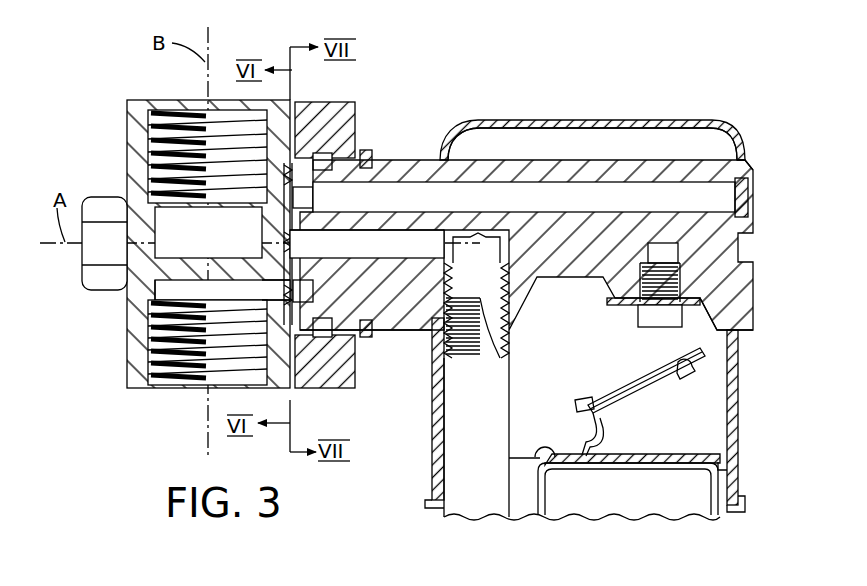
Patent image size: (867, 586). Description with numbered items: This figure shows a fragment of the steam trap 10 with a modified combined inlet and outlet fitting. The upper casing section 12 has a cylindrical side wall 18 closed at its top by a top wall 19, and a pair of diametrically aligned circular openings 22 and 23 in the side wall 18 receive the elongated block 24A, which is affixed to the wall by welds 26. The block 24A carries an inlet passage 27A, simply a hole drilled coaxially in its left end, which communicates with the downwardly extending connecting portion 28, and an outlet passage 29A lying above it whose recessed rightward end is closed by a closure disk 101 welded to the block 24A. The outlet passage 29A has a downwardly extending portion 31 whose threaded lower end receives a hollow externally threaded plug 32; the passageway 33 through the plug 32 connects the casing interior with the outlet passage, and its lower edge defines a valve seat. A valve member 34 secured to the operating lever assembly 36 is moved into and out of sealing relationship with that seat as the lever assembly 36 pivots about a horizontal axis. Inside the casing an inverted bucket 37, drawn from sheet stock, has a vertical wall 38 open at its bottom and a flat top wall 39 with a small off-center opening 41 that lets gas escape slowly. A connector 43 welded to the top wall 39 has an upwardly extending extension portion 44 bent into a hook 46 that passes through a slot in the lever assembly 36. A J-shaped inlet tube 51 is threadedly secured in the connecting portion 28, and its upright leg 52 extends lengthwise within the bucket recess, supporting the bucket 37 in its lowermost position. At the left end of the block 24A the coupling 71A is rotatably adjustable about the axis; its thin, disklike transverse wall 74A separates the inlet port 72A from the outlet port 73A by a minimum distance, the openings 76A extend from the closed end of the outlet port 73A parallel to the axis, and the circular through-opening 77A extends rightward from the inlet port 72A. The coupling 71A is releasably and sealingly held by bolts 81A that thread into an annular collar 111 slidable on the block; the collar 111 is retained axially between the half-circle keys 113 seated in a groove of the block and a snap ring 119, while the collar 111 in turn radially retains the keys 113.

The coupling 71A is at (124, 165).
The inlet port 72A is at (196, 108).
The outlet port 73A is at (183, 390).
The transverse wall 74A is at (178, 270).
The openings 76A is at (272, 289).
The circular through-opening 77A is at (270, 236).
The bolts 81A is at (102, 283).
The annular collar 111 is at (324, 98).
The half-circle keys 113 is at (323, 156).
The snap ring 119 is at (367, 150).
The inlet passage 27A is at (436, 245).
The outlet passage 29A is at (481, 192).
The top wall 19 is at (603, 124).
The block 24A is at (631, 158).
The welds 26 is at (739, 156).
The closure disk 101 is at (751, 196).
The connecting portion 28 is at (512, 280).
The downwardly extending portion 31 is at (612, 293).
The plug 32 is at (640, 319).
The passageway 33 is at (666, 334).
The circular opening 22 is at (735, 325).
The upper casing section 12 is at (741, 368).
The circular opening 23 is at (434, 322).
The cylindrical side wall 18 is at (431, 424).
The upright leg 52 is at (510, 389).
The hook 46 is at (584, 402).
The small opening 41 is at (560, 446).
The extension portion 44 is at (598, 443).
The connector 43 is at (650, 455).
The operating lever assembly 36 is at (632, 393).
The valve member 34 is at (687, 375).
The inverted bucket 37 is at (721, 471).
The top wall 39 is at (641, 464).
The vertical wall 38 is at (709, 500).
The steam trap 10 is at (746, 494).
The inlet tube 51 is at (438, 518).